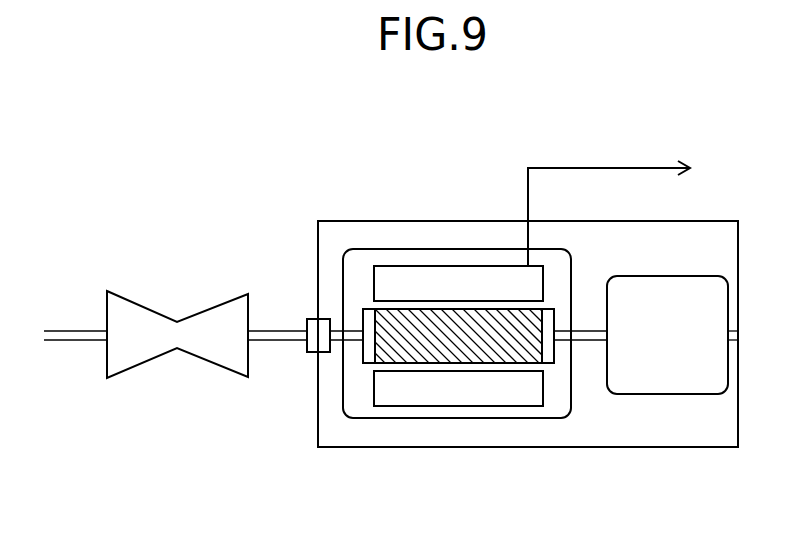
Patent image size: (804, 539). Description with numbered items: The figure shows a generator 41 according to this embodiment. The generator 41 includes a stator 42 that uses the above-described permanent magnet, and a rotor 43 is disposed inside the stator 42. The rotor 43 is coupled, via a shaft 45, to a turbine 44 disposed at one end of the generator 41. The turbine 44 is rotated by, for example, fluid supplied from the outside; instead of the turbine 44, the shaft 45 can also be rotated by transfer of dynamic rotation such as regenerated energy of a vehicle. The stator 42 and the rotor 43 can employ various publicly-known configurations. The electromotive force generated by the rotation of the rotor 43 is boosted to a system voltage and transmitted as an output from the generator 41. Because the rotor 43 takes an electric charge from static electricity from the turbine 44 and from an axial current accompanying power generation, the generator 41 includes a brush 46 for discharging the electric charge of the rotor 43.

The generator 41 is at (361, 221).
The stator 42 is at (428, 397).
The rotor 43 is at (471, 353).
The turbine 44 is at (218, 300).
The shaft 45 is at (283, 343).
The brush 46 is at (658, 378).